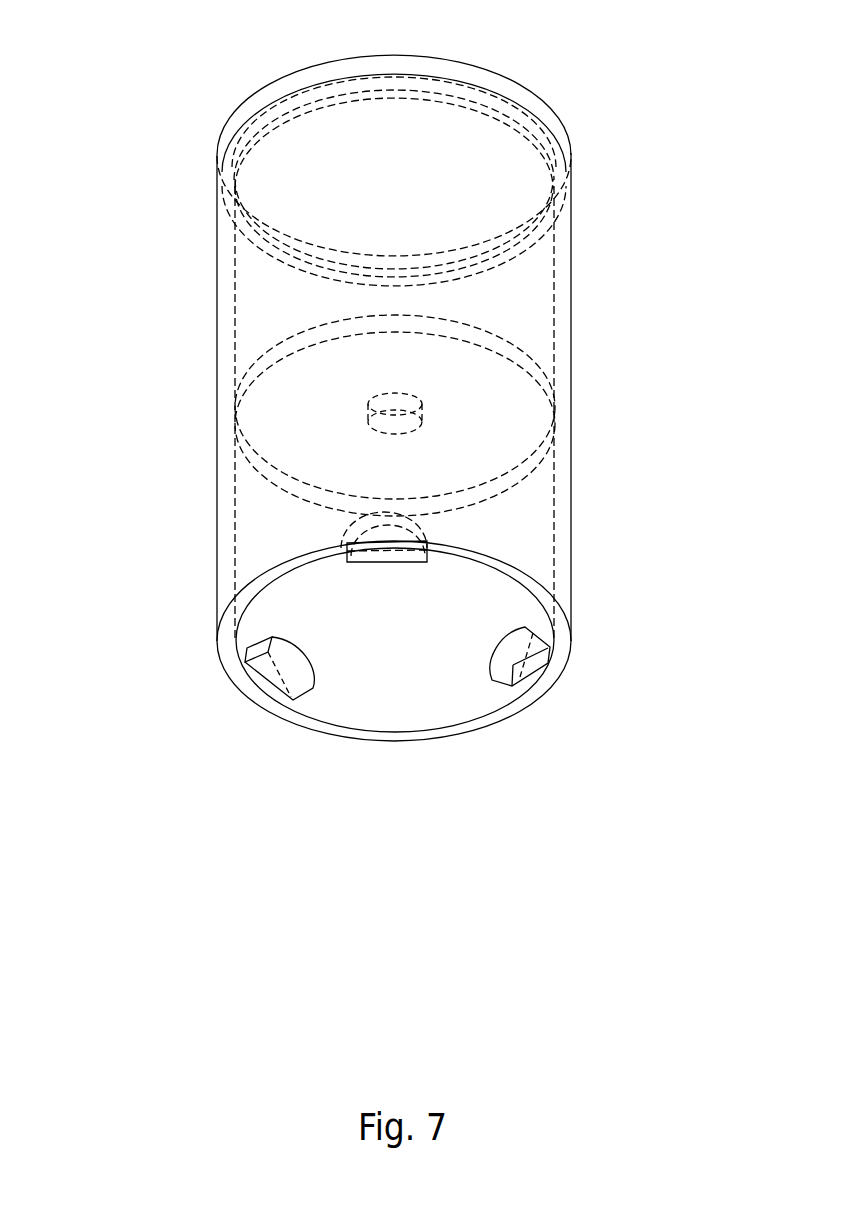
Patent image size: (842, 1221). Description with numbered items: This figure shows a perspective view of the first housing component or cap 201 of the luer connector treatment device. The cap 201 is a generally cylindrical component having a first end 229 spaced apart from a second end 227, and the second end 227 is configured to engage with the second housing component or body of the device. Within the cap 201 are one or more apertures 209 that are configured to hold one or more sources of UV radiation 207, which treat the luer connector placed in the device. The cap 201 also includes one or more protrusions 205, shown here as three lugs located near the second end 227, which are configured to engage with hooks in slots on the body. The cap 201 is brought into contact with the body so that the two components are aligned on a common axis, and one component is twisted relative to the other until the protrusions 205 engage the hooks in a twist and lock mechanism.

The first housing component or cap 201 is at (136, 85).
The protrusions 205 is at (357, 533).
The sources of UV radiation 207 is at (412, 418).
The apertures 209 is at (397, 413).
The second end 227 is at (417, 737).
The first end 229 is at (552, 108).